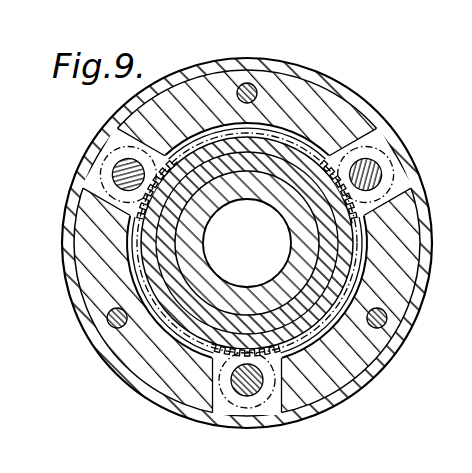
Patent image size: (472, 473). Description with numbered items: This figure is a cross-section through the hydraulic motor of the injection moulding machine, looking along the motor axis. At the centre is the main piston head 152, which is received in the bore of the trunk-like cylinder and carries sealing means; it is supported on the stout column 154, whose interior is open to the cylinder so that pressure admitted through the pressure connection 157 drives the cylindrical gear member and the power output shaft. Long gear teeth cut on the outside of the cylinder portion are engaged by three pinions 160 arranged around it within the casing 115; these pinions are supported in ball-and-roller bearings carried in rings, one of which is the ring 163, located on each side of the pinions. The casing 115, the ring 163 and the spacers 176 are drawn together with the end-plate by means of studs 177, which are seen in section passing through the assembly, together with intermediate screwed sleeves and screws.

The casing 115 is at (240, 425).
The main piston head 152 is at (219, 135).
The stout column 154 is at (201, 152).
The pressure connection 157 is at (118, 114).
The pinions 160 is at (362, 145).
The ring 163 is at (98, 177).
The spacers 176 is at (293, 92).
The studs 177 is at (246, 82).